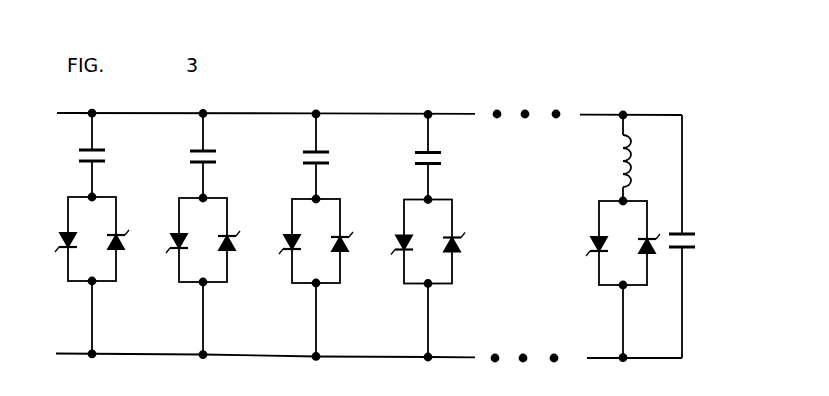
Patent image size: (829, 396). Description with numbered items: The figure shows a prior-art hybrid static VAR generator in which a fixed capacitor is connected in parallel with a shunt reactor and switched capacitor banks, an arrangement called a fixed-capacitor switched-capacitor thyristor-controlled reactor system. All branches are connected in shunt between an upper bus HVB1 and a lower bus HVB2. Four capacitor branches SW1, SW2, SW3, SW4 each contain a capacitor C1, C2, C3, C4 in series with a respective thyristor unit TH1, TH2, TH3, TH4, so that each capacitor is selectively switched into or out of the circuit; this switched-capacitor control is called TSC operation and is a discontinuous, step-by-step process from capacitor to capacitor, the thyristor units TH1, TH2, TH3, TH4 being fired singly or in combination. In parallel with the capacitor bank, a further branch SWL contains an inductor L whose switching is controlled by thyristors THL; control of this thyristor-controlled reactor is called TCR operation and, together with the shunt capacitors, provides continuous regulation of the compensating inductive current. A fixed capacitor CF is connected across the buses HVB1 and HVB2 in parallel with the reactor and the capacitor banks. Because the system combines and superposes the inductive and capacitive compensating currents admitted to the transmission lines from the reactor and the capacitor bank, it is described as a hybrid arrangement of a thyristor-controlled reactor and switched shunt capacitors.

The first high voltage bus HVB1 is at (325, 113).
The second high voltage bus HVB2 is at (415, 357).
The capacitor C1 is at (80, 141).
The capacitor C2 is at (182, 144).
The capacitor C3 is at (298, 144).
The capacitor C4 is at (411, 144).
The thyristor unit TH1 is at (109, 226).
The thyristor unit TH2 is at (219, 226).
The thyristor unit TH3 is at (328, 227).
The thyristor unit TH4 is at (443, 228).
The thyristors THL is at (603, 229).
The inductor L is at (610, 158).
The fixed capacitor CF is at (693, 242).
The first switched capacitor branch SW1 is at (109, 234).
The second switched capacitor branch SW2 is at (210, 234).
The third switched capacitor branch SW3 is at (323, 235).
The fourth switched capacitor branch SW4 is at (438, 236).
The switched inductor branch SWL is at (603, 237).